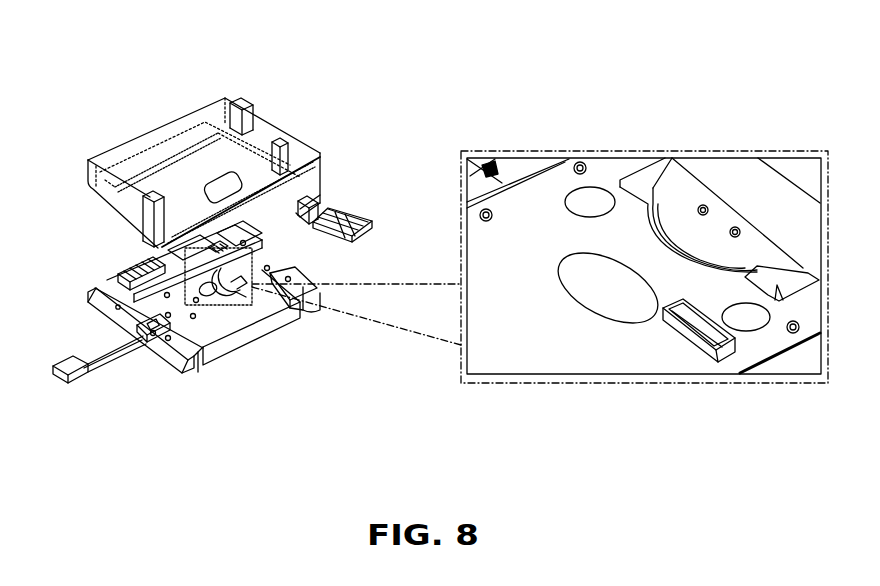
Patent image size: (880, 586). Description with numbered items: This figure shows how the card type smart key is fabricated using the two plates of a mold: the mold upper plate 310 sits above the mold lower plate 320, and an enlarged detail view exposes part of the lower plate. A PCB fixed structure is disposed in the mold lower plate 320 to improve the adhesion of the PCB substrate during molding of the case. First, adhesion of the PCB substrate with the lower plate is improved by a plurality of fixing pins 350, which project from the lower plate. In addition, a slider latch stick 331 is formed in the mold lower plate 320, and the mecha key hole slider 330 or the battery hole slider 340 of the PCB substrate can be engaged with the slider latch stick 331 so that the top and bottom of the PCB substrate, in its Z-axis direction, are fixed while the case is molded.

The mold upper plate 310 is at (193, 123).
The mold lower plate 320 is at (240, 342).
The mecha key hole slider 330 is at (70, 360).
The slider latch stick 331 is at (678, 334).
The battery hole slider 340 is at (356, 212).
The plurality of fixing pins 350 is at (492, 208).